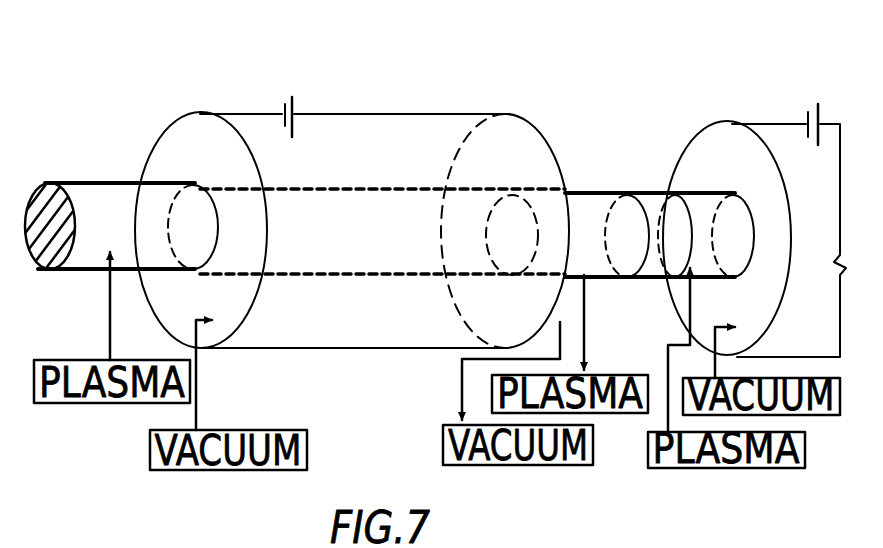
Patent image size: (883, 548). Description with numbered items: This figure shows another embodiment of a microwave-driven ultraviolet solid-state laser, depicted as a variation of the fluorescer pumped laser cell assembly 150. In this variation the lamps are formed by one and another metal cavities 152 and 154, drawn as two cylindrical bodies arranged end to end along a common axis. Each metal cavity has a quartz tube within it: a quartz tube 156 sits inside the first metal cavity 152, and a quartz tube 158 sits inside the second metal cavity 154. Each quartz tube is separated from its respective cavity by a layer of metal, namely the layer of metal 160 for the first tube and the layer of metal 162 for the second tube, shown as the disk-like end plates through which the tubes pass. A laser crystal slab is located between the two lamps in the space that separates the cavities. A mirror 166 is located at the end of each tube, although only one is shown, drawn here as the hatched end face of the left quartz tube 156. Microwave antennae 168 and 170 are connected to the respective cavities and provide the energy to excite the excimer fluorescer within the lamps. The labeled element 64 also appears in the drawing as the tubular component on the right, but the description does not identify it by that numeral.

The fluorescer pumped laser cell assembly 150 is at (530, 91).
The metal cavity 152 is at (312, 114).
The metal cavity 154 is at (765, 137).
The quartz tube 156 is at (87, 197).
The quartz tube 158 is at (708, 192).
The layer of metal 160 is at (118, 183).
The layer of metal 162 is at (692, 192).
The mirror 166 is at (42, 185).
The microwave antenna 168 is at (278, 107).
The microwave antenna 170 is at (822, 94).
The electrode 64 is at (657, 262).